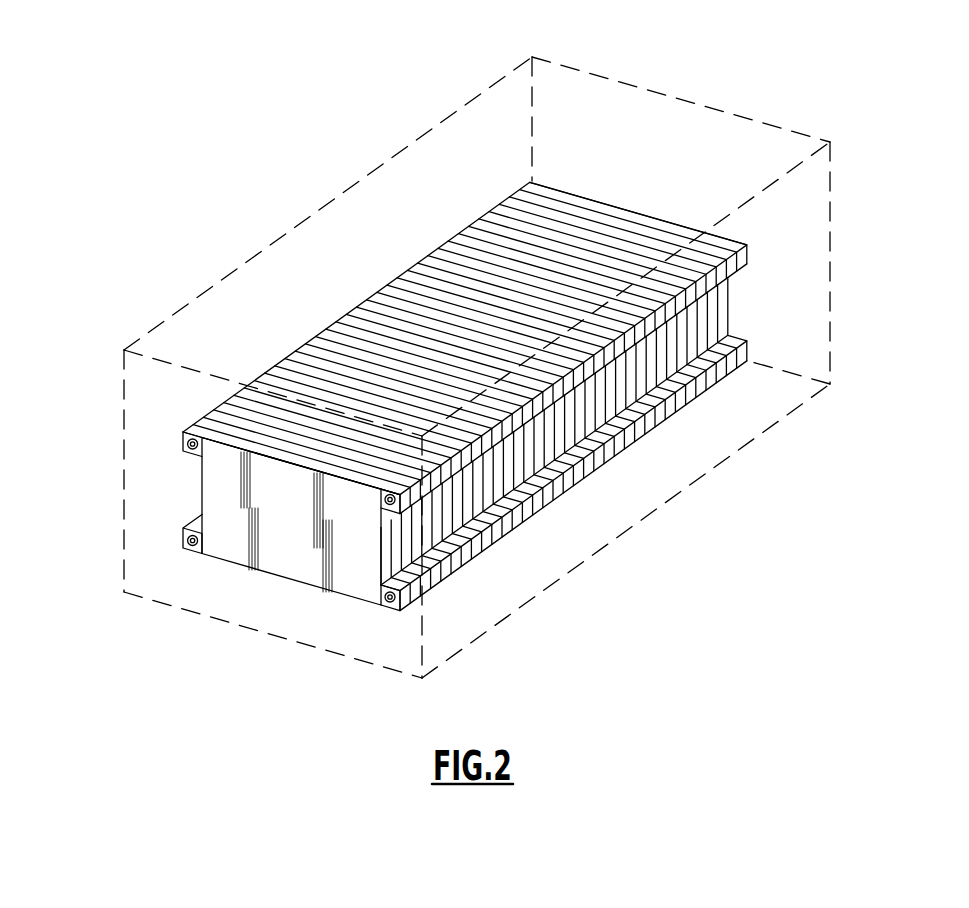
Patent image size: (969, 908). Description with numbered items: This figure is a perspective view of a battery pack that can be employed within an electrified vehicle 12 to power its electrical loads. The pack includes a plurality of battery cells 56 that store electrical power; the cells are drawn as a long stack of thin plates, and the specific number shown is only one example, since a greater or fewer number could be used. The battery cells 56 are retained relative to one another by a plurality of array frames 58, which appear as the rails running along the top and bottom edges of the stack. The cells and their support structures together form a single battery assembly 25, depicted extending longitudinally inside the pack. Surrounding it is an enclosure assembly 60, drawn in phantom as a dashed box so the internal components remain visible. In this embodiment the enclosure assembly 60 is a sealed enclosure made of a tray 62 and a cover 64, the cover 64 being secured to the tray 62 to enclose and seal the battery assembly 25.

The electrified vehicle 12 is at (436, 370).
The battery assembly 25 is at (489, 369).
The battery cells 56 is at (432, 537).
The array frames 58 is at (421, 590).
The enclosure assembly 60 is at (436, 396).
The tray 62 is at (340, 667).
The cover 64 is at (760, 160).